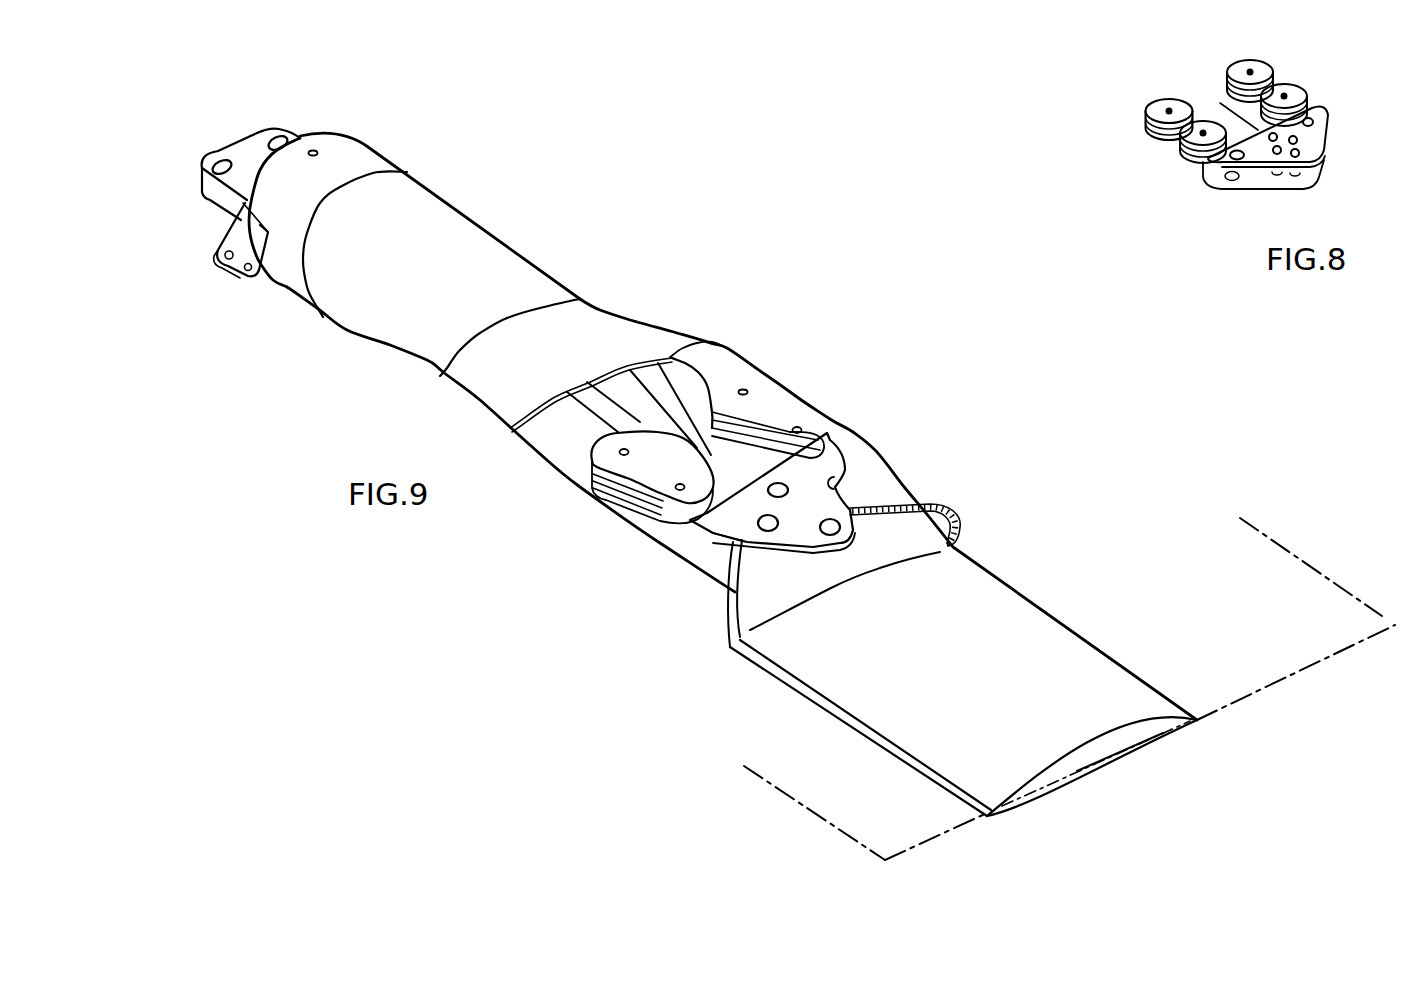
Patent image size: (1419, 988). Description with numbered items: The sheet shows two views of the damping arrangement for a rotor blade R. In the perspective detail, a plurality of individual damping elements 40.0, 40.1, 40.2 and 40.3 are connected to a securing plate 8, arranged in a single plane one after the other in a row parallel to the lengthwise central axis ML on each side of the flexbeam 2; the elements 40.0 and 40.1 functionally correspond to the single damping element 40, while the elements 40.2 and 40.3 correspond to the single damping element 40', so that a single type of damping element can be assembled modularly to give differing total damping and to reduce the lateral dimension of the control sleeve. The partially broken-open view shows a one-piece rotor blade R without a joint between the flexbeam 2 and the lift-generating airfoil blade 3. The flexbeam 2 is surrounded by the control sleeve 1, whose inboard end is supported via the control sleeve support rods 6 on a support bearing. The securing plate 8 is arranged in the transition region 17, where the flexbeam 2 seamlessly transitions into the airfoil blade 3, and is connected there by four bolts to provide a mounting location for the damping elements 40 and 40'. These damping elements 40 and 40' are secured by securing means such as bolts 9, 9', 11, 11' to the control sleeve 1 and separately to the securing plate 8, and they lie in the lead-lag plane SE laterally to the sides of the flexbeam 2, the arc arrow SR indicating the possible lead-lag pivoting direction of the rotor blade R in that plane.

In FIG. 9, the control sleeve 1 is at (491, 262).
In FIG. 9, the flexbeam 2 is at (248, 160).
In FIG. 9, the lift-generating airfoil blade 3 is at (1026, 619).
In FIG. 9, the control sleeve support rod 6 is at (312, 150).
In FIG. 9, the securing plate 8 is at (710, 520).
In FIG. 8, the securing plate 8 is at (1330, 138).
In FIG. 9, the securing means (bolt) 9 is at (747, 385).
In FIG. 9, the securing means (bolt) 9' is at (810, 382).
In FIG. 9, the securing means (bolt) 11 is at (615, 487).
In FIG. 9, the securing means (bolt) 11' is at (615, 552).
In FIG. 9, the transition region 17 is at (618, 775).
In FIG. 9, the damping element 40 is at (652, 540).
In FIG. 9, the damping element 40' is at (860, 413).
In FIG. 8, the individual damping element 40.0 is at (1182, 162).
In FIG. 8, the individual damping element 40.1 is at (1150, 134).
In FIG. 8, the individual damping element 40.2 is at (1303, 91).
In FIG. 8, the individual damping element 40.3 is at (1262, 63).
In FIG. 8, the lengthwise central axis ML is at (1308, 167).
In FIG. 9, the rotor blade R is at (958, 381).
In FIG. 9, the lead-lag pivoting direction SR is at (1104, 706).
In FIG. 9, the lead-lag plane SE is at (1366, 630).